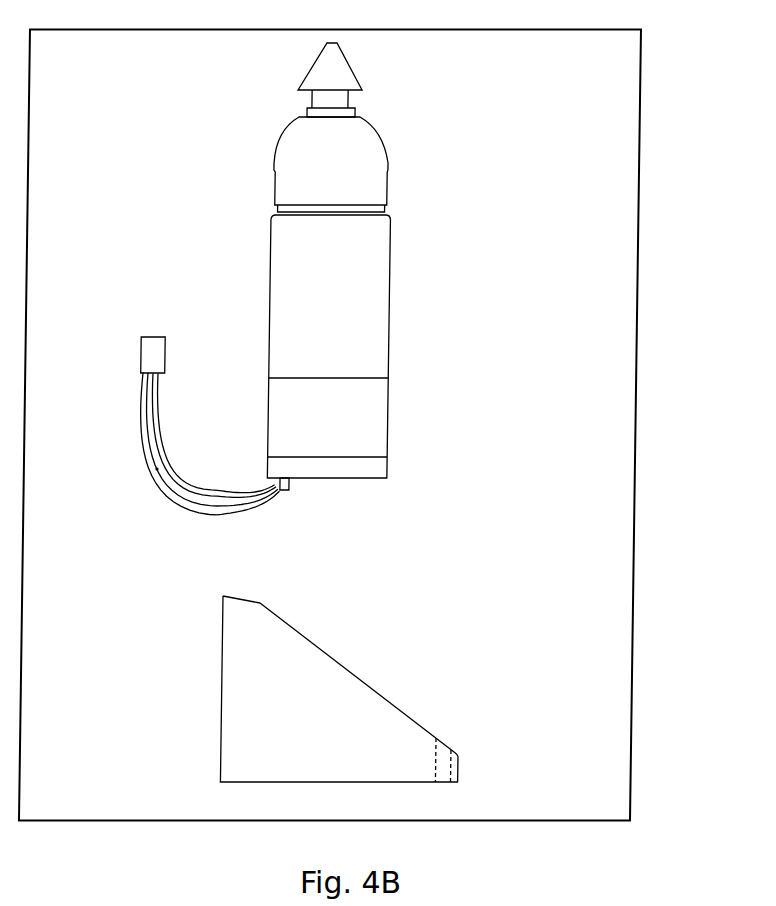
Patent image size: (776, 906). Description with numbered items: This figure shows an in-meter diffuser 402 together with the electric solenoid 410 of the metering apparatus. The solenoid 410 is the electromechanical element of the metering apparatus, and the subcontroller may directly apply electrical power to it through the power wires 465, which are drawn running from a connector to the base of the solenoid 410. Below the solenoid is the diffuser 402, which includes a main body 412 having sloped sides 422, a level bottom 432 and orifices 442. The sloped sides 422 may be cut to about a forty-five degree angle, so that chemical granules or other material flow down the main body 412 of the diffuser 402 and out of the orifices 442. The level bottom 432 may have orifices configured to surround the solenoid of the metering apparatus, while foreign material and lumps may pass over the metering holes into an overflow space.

The in-meter diffuser 402 is at (640, 378).
The electric solenoid 410 is at (377, 294).
The power wires 465 is at (140, 458).
The main body 412 is at (252, 699).
The sloped sides 422 is at (351, 649).
The orifices 442 is at (454, 745).
The level bottom 432 is at (467, 763).